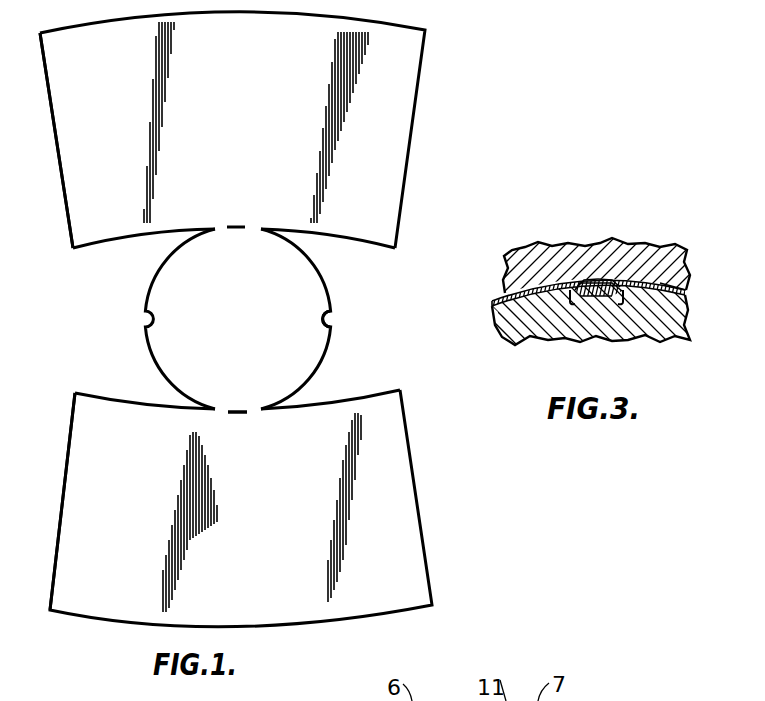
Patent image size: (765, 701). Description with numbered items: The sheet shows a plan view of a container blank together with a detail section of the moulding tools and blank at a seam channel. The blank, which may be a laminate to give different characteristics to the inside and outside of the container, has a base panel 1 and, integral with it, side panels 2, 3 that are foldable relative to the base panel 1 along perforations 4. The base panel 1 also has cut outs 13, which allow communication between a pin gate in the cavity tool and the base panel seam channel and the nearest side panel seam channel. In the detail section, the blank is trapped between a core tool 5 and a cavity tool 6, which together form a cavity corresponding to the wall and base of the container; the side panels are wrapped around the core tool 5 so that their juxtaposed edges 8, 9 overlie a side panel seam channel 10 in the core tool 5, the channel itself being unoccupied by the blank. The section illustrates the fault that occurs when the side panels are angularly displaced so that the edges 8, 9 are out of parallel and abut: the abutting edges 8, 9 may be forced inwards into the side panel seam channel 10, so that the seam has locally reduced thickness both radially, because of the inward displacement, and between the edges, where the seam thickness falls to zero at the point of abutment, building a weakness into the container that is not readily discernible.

In FIG. 1, the base panel 1 is at (241, 328).
In FIG. 1, the side panel 2 is at (246, 141).
In FIG. 3, the side panel 2 is at (657, 283).
In FIG. 1, the side panel 3 is at (260, 541).
In FIG. 3, the side panel 3 is at (513, 295).
In FIG. 1, the perforations 4 is at (239, 413).
In FIG. 3, the core tool 5 is at (533, 338).
In FIG. 3, the cavity tool 6 is at (526, 263).
In FIG. 1, the edge 8 is at (70, 449).
In FIG. 3, the edge 8 is at (588, 283).
In FIG. 1, the edge 9 is at (66, 186).
In FIG. 3, the edge 9 is at (612, 283).
In FIG. 3, the side panel seam channel 10 is at (608, 297).
In FIG. 1, the cut outs 13 is at (337, 317).